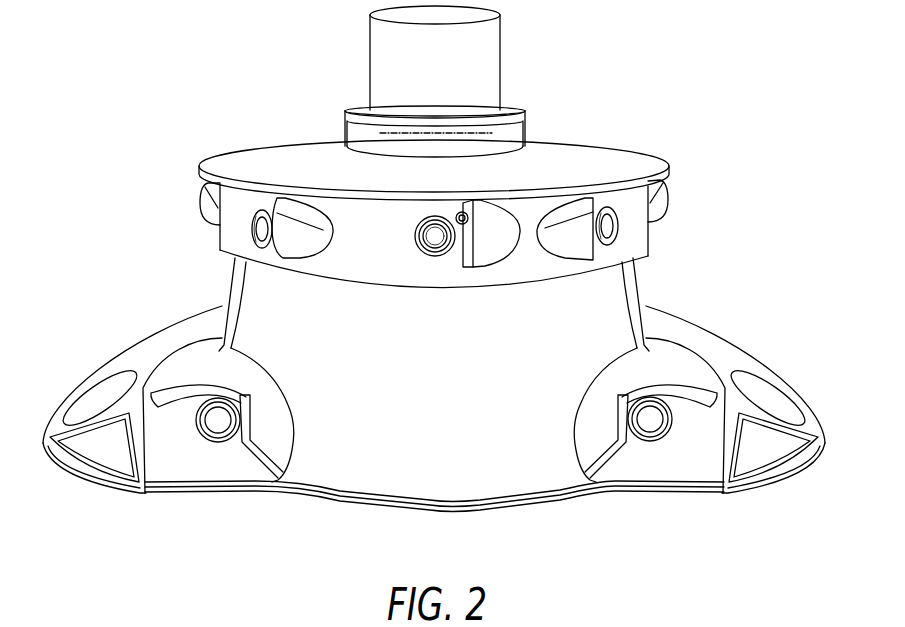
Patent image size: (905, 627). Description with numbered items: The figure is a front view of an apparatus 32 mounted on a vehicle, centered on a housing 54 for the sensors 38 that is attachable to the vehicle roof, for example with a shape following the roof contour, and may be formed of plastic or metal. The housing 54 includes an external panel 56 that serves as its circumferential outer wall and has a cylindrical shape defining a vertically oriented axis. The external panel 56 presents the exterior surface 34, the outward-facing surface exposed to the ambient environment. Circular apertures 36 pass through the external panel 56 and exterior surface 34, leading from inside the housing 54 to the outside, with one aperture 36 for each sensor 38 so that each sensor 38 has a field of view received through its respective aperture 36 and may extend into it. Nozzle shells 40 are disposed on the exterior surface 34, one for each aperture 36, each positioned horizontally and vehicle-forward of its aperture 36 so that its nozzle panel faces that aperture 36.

The apparatus 32 is at (434, 279).
The exterior surface 34 is at (470, 273).
The aperture 36 is at (256, 244).
The sensor 38 is at (418, 222).
The nozzle shell 40 is at (200, 205).
The housing 54 is at (629, 146).
The external panel 56 is at (427, 288).